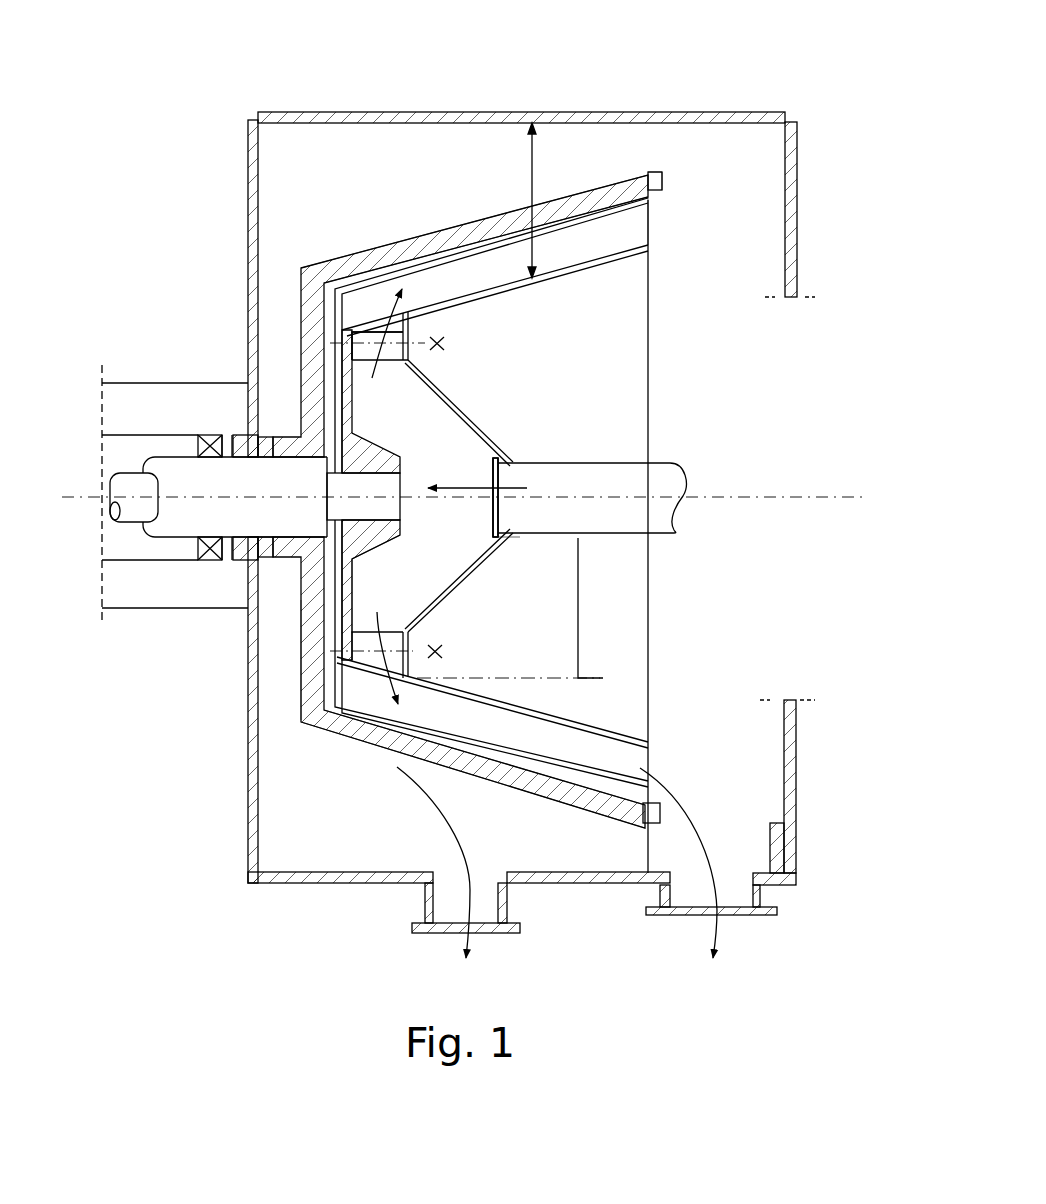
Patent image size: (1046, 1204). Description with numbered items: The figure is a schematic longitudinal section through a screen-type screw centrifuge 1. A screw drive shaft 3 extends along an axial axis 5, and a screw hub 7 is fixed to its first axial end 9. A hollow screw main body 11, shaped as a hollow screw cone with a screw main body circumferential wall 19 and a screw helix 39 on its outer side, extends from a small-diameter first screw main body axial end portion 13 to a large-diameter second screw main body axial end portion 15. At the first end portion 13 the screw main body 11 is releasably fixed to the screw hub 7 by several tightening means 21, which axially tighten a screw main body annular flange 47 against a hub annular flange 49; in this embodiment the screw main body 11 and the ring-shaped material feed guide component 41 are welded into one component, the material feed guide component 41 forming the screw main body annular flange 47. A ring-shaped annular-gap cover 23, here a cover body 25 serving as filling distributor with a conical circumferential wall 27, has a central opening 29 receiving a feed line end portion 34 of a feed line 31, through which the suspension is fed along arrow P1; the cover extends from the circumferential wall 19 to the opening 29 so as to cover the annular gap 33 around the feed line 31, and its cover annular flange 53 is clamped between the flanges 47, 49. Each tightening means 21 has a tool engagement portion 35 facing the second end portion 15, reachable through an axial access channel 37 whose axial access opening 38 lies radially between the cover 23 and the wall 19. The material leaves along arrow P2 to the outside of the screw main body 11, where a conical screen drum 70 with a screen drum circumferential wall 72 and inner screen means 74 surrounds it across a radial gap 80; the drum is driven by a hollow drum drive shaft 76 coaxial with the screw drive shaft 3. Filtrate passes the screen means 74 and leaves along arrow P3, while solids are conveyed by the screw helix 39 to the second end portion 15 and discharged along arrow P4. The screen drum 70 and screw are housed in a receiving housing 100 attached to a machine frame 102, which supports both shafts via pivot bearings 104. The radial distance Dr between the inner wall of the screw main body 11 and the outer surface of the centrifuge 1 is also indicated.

The screen-type screw centrifuge 1 is at (207, 68).
The receiving housing 100 is at (305, 112).
The screen drum 70 is at (342, 290).
The first screw main body axial end portion 13 is at (376, 258).
The cover annular flange 53 is at (430, 320).
The radial distance Dr is at (540, 148).
The screen drum circumferential wall 72 is at (566, 192).
The screen means 74 is at (617, 195).
The screw helix 39 is at (626, 223).
The screw main body circumferential wall 19 is at (567, 277).
The hollow screw main body 11 is at (462, 297).
The axial access channel 37 is at (607, 335).
The tightening means 21 is at (410, 333).
The tool engagement portion 35 is at (443, 346).
The conical circumferential wall 27 is at (478, 412).
The annular-gap cover 23 is at (487, 440).
The cover body 25 is at (495, 497).
The feed line end portion 34 is at (588, 470).
The feed line 31 is at (533, 497).
The screw drive shaft 3 is at (133, 480).
The pivot bearings 104 is at (215, 435).
The drum drive shaft 76 is at (197, 527).
The machine frame 102 is at (133, 600).
The axial end of the screw drive shaft 9 is at (350, 598).
The screw hub 7 is at (345, 613).
The hub annular flange 49 is at (330, 650).
The screw main body annular flange 47 is at (322, 345).
The material feed guide component 41 is at (352, 342).
The axial axis 5 is at (806, 497).
The second screw main body axial end portion 15 is at (617, 758).
The axial access opening 38 is at (529, 717).
The radial gap 80 is at (605, 795).
The central opening 29 is at (513, 540).
The annular gap 33 is at (580, 627).
The arrow P1 is at (467, 490).
The arrow P2 is at (377, 370).
The arrow P3 is at (443, 813).
The arrow P4 is at (677, 790).